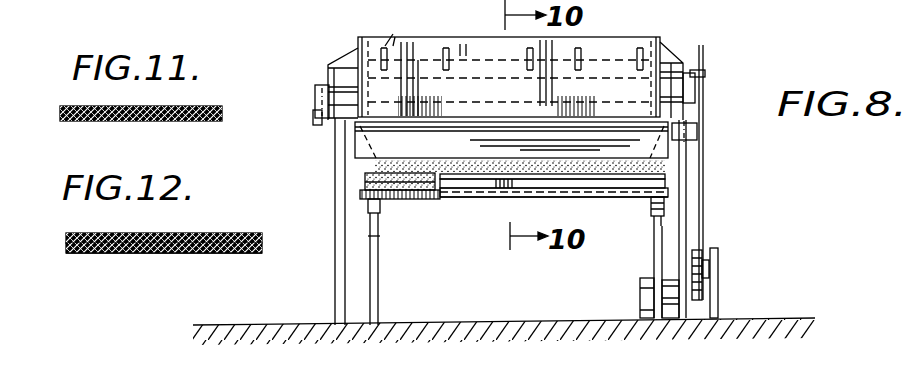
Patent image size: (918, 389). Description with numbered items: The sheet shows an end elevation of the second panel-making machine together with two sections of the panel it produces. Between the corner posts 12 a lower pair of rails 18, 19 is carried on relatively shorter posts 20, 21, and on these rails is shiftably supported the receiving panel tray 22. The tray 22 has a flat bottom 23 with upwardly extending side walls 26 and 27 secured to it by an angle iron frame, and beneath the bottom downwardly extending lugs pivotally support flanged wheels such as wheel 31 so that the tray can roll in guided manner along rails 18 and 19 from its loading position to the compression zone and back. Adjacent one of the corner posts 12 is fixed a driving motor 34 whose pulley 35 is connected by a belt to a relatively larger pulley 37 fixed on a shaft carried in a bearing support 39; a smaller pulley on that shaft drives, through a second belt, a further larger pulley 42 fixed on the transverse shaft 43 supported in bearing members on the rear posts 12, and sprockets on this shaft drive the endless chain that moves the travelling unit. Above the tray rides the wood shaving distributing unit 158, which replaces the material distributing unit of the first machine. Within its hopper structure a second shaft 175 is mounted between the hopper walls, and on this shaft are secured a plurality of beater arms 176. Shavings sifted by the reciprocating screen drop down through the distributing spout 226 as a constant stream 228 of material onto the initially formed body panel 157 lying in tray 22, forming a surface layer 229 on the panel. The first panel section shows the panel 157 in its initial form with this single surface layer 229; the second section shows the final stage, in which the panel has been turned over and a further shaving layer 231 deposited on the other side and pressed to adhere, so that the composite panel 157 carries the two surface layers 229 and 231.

In FIG. 11, the panel 157 is at (180, 104).
In FIG. 12, the panel 157 is at (66, 244).
In FIG. 8, the panel 157 is at (406, 199).
In FIG. 12, the surface layer 229 is at (186, 233).
In FIG. 8, the surface layer 229 is at (500, 182).
In FIG. 12, the shaving layer 231 is at (80, 255).
In FIG. 8, the wood shaving distributing unit 158 is at (648, 40).
In FIG. 8, the beater arms 176 is at (388, 44).
In FIG. 8, the second shaft 175 is at (463, 44).
In FIG. 8, the larger pulley 42 is at (704, 56).
In FIG. 8, the transverse shaft 43 is at (706, 74).
In FIG. 8, the stream of material 228 is at (404, 170).
In FIG. 8, the distributing spout 226 is at (678, 159).
In FIG. 8, the receiving panel tray 22 is at (598, 199).
In FIG. 8, the side wall 26 is at (680, 181).
In FIG. 8, the side wall 27 is at (365, 178).
In FIG. 8, the flanged wheel 31 is at (368, 211).
In FIG. 8, the lower rail 18 is at (378, 237).
In FIG. 8, the shorter post 20 is at (379, 273).
In FIG. 8, the corner post 12 is at (335, 267).
In FIG. 8, the flat bottom 23 is at (490, 200).
In FIG. 8, the lower rail 19 is at (652, 223).
In FIG. 8, the shorter post 21 is at (654, 249).
In FIG. 8, the driving motor 34 is at (640, 292).
In FIG. 8, the larger pulley 37 is at (719, 253).
In FIG. 8, the bearing support 39 is at (719, 279).
In FIG. 8, the pulley 35 is at (703, 292).